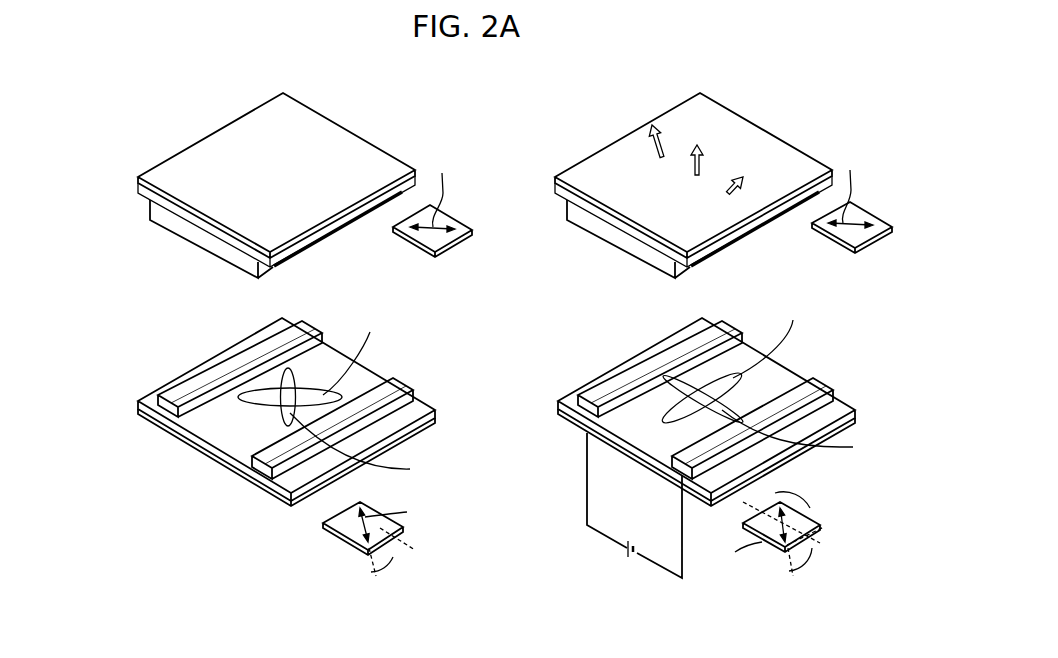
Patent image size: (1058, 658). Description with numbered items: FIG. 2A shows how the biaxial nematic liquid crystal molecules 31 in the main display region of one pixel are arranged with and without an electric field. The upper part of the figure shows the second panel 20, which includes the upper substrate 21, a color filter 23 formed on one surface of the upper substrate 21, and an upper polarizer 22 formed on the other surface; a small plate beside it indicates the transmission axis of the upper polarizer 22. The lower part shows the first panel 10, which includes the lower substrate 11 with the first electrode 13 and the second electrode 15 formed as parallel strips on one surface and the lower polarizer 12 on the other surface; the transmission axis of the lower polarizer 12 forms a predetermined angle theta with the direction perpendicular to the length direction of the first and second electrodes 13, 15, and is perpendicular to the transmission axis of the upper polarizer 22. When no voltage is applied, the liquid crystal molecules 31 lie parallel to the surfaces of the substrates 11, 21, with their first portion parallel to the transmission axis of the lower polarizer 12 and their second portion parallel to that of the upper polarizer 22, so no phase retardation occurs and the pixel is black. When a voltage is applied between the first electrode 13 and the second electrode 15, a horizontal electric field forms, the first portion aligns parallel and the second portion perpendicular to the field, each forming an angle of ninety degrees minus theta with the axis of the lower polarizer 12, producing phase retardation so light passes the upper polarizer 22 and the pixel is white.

The first panel 10 is at (467, 456).
The lower substrate 11 is at (155, 425).
The lower polarizer 12 is at (167, 437).
The first electrode 13 is at (175, 400).
The second electrode 15 is at (258, 470).
The second panel 20 is at (475, 190).
The upper substrate 21 is at (138, 189).
The upper polarizer 22 is at (162, 172).
The color filter 23 is at (457, 235).
The liquid crystal molecules 31 is at (269, 385).